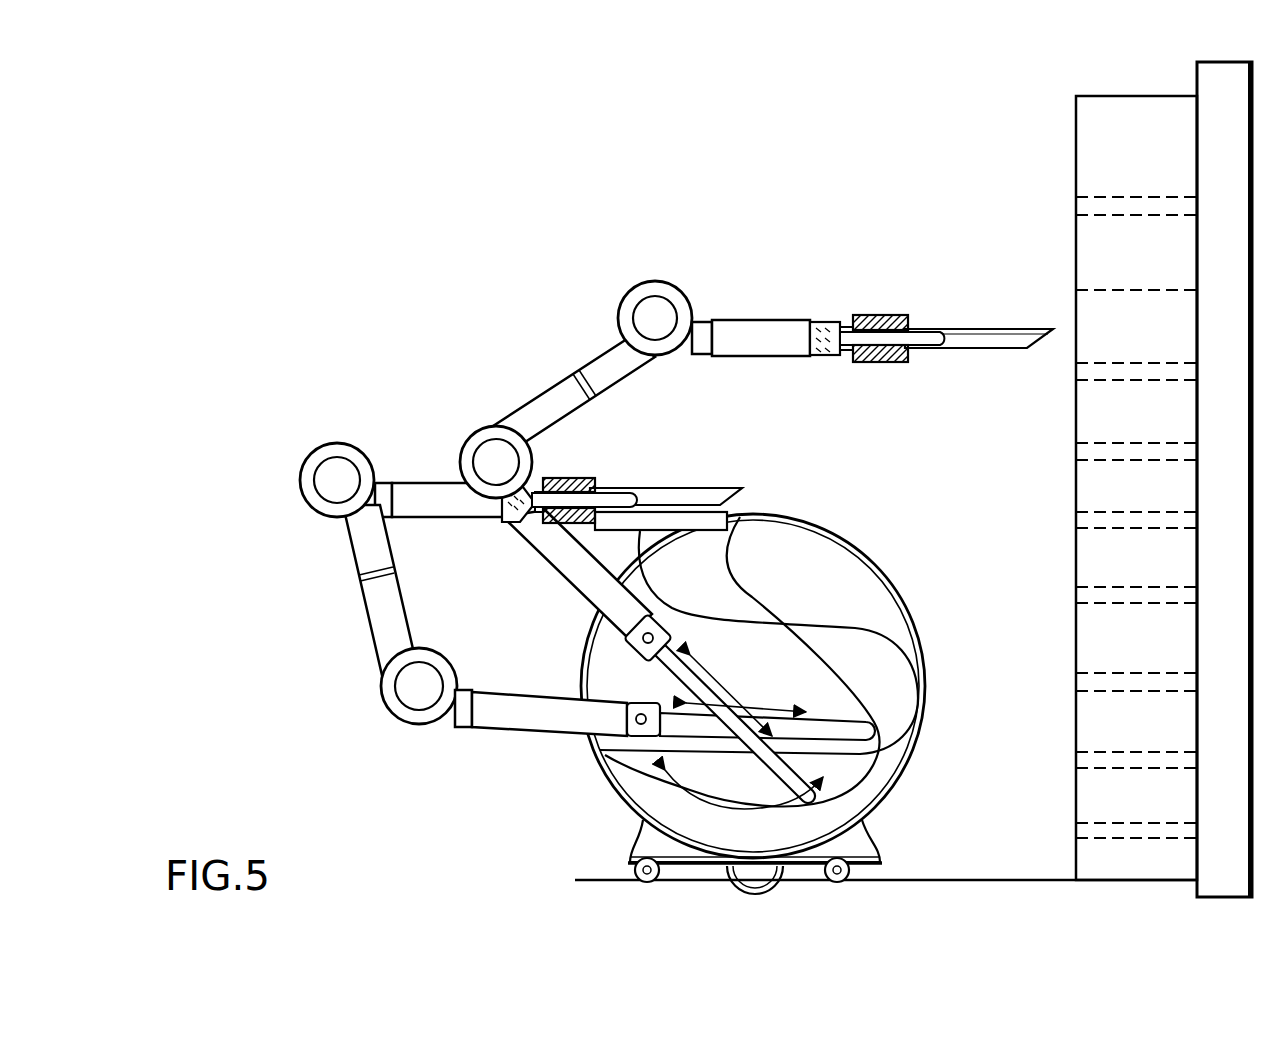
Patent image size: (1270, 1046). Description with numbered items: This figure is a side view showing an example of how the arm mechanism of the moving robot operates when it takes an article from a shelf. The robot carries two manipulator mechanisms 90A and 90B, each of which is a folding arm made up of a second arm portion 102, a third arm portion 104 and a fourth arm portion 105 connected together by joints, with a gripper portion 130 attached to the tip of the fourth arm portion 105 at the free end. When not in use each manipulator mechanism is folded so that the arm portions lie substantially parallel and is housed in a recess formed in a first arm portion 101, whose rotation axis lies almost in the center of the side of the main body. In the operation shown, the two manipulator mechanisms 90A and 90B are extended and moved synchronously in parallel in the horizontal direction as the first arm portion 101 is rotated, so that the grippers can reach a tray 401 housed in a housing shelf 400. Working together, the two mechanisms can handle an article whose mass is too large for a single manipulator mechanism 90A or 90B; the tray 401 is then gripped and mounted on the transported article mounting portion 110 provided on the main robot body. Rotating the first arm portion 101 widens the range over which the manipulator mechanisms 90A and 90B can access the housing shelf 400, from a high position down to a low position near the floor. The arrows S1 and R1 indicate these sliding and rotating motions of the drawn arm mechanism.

The manipulator mechanism 90A is at (593, 326).
The manipulator mechanism 90B is at (404, 462).
The first arm portion 101 is at (630, 780).
The second arm portion 102 is at (548, 720).
The third arm portion 104 is at (543, 402).
The fourth arm portion 105 is at (748, 327).
The transported article mounting portion 110 is at (667, 520).
The gripper portion 130 is at (882, 315).
The housing shelf 400 is at (1076, 122).
The tray 401 is at (997, 340).
The sliding direction S1 is at (716, 679).
The rotating direction R1 is at (720, 803).